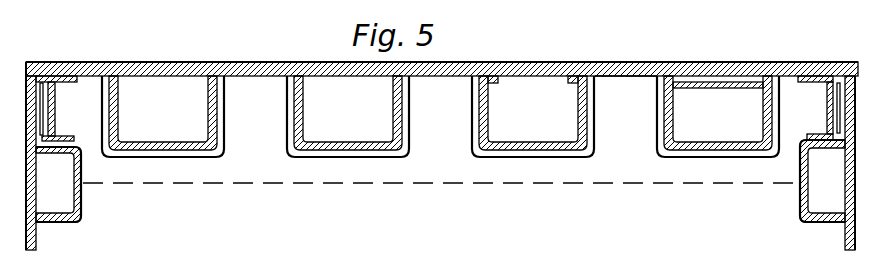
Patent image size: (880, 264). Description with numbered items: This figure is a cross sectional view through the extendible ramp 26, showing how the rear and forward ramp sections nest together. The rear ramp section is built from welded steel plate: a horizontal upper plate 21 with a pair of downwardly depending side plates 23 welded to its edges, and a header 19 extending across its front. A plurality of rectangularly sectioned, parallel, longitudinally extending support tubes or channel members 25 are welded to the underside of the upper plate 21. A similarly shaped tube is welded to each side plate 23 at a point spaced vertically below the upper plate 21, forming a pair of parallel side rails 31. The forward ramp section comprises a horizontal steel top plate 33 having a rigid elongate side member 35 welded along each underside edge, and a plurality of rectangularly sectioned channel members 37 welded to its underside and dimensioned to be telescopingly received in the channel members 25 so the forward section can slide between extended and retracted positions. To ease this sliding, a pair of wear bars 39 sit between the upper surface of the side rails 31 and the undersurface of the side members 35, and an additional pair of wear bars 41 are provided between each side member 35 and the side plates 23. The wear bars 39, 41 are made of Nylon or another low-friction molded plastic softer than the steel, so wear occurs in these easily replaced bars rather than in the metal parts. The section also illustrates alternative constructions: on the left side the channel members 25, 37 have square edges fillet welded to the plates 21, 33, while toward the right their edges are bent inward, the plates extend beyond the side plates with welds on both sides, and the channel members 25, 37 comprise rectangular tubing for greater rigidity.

The header 19 is at (265, 172).
The upper plate 21 is at (128, 63).
The side plates 23 is at (27, 172).
The channel members 25 is at (185, 157).
The ramp 26 is at (602, 53).
The side rails 31 is at (82, 197).
The top plate 33 is at (635, 78).
The side member 35 is at (57, 99).
The channel members 37 is at (203, 157).
The wear bars 39 is at (82, 143).
The wear bars 41 is at (40, 105).